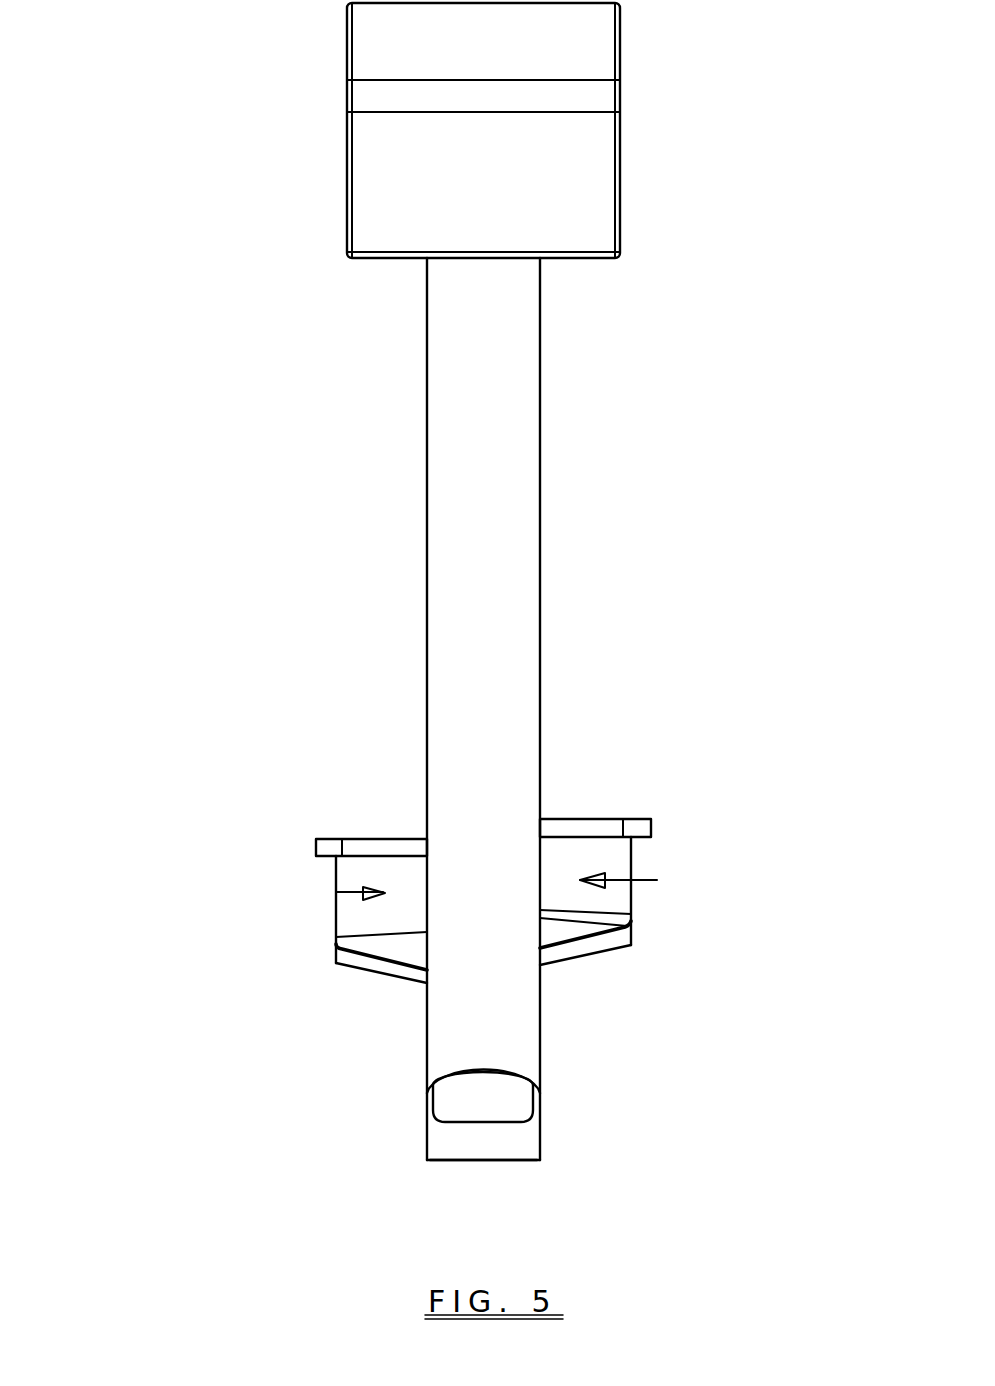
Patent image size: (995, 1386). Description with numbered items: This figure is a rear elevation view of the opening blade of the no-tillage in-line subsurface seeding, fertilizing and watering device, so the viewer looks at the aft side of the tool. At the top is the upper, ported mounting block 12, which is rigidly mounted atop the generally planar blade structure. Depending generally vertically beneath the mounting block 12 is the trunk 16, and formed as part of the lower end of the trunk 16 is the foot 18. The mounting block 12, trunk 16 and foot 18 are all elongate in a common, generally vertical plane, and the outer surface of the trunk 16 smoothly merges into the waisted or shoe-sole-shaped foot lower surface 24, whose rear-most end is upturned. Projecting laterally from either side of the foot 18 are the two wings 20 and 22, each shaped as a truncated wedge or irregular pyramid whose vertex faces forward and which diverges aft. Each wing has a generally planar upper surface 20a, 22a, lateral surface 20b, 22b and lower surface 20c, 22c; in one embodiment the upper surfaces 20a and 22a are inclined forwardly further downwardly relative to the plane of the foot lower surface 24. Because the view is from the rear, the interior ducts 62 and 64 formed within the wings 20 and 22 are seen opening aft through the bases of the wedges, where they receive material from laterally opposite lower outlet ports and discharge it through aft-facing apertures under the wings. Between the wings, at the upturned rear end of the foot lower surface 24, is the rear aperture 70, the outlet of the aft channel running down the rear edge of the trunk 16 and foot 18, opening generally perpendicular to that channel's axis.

The mounting block 12 is at (600, 53).
The trunk 16 is at (720, 477).
The foot structure 18 is at (718, 1192).
The wing 20 is at (239, 904).
The upper surface 20a is at (387, 838).
The lateral surface 20b is at (336, 878).
The lower surface 20c is at (388, 978).
The wing 22 is at (704, 896).
The upper surface 22a is at (605, 818).
The lateral surface 22b is at (637, 910).
The lower surface 22c is at (572, 960).
The foot lower surface 24 is at (470, 1162).
The interior duct 62 is at (337, 892).
The interior duct 64 is at (657, 880).
The rear aperture 70 is at (489, 1083).